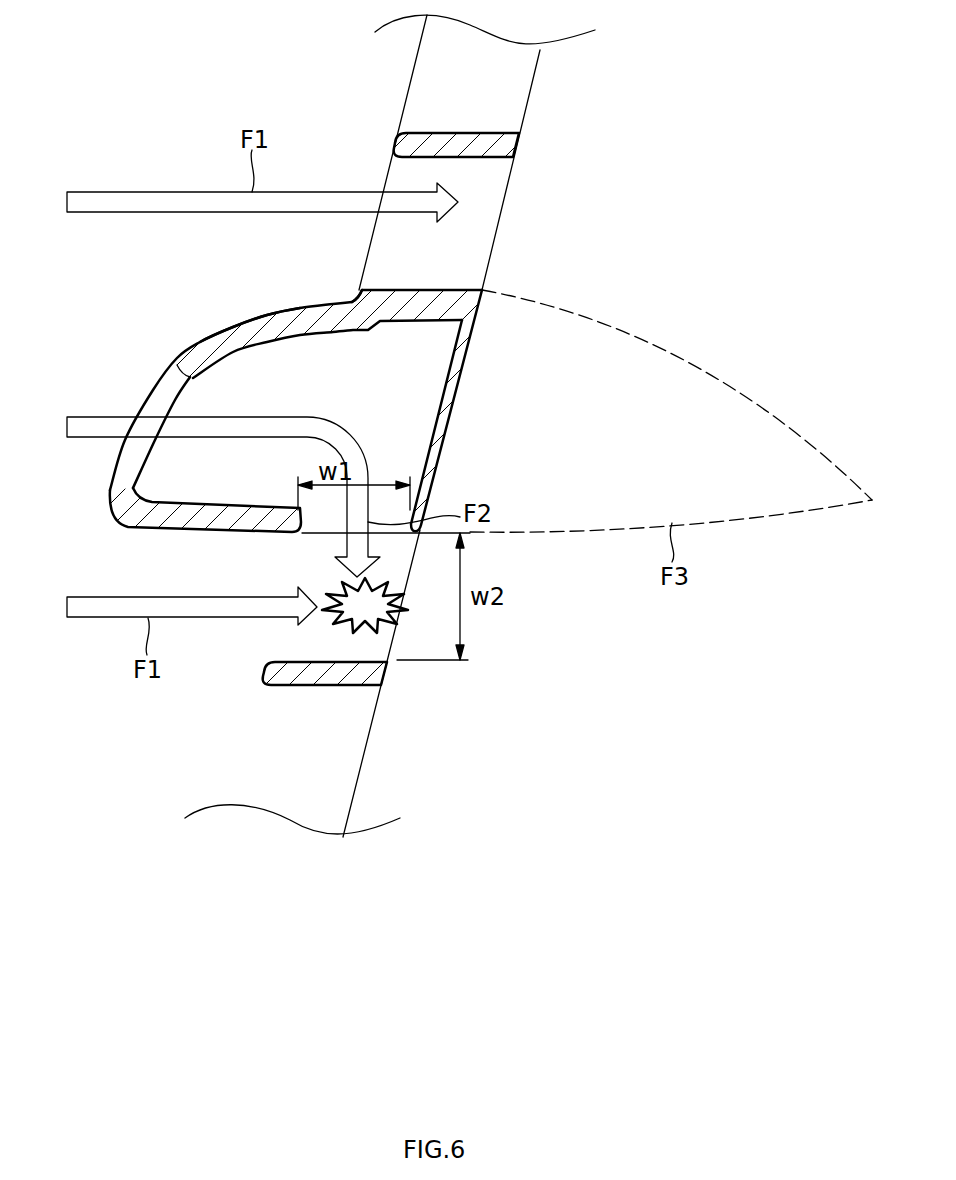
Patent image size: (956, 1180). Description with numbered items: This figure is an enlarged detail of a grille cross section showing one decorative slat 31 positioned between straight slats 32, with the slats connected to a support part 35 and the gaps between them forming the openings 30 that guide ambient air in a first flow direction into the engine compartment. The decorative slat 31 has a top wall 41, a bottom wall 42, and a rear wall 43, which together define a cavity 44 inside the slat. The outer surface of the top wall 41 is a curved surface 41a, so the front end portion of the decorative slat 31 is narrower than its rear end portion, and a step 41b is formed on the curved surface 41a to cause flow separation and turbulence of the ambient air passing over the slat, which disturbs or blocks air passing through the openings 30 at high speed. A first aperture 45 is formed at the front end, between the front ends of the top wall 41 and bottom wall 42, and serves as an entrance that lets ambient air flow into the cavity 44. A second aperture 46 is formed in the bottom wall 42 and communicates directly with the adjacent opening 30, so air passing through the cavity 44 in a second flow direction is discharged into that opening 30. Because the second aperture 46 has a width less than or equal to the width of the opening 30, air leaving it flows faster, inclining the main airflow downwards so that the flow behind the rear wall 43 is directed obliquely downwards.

The opening 30 is at (462, 221).
The decorative slat 31 is at (478, 400).
The straight slat 32 is at (440, 133).
The support part 35 is at (363, 782).
The top wall 41 is at (223, 350).
The curved surface 41a is at (285, 313).
The step 41b is at (353, 301).
The bottom wall 42 is at (188, 515).
The rear wall 43 is at (435, 435).
The cavity 44 is at (378, 388).
The first aperture 45 is at (128, 463).
The second aperture 46 is at (318, 521).